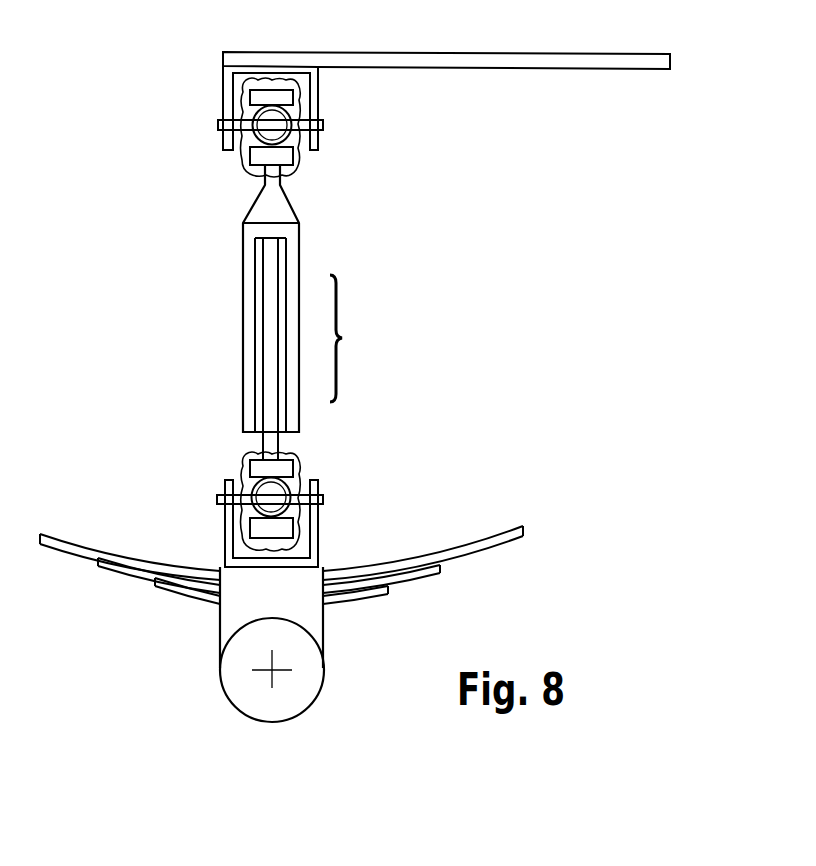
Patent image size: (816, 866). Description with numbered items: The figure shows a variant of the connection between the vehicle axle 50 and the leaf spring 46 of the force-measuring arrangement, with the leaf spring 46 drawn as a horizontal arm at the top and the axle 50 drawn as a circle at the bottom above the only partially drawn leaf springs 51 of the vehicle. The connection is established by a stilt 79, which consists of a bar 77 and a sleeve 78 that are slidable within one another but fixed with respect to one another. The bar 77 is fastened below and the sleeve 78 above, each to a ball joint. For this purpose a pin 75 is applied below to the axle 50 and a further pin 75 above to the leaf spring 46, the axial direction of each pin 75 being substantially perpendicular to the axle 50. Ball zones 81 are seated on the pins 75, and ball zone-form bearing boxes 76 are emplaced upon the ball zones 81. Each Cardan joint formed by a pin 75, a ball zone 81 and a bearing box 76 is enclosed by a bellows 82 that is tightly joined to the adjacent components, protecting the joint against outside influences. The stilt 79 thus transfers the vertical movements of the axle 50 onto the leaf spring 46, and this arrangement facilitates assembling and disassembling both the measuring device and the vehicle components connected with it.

The leaf spring 46 is at (433, 60).
The axle 50 is at (245, 659).
The leaf springs 51 is at (177, 578).
The pin 75 is at (325, 127).
The bearing box 76 is at (262, 158).
The bar 77 is at (272, 343).
The sleeve 78 is at (253, 253).
The stilt 79 is at (356, 338).
The ball zone 81 is at (275, 117).
The bellows 82 is at (268, 95).